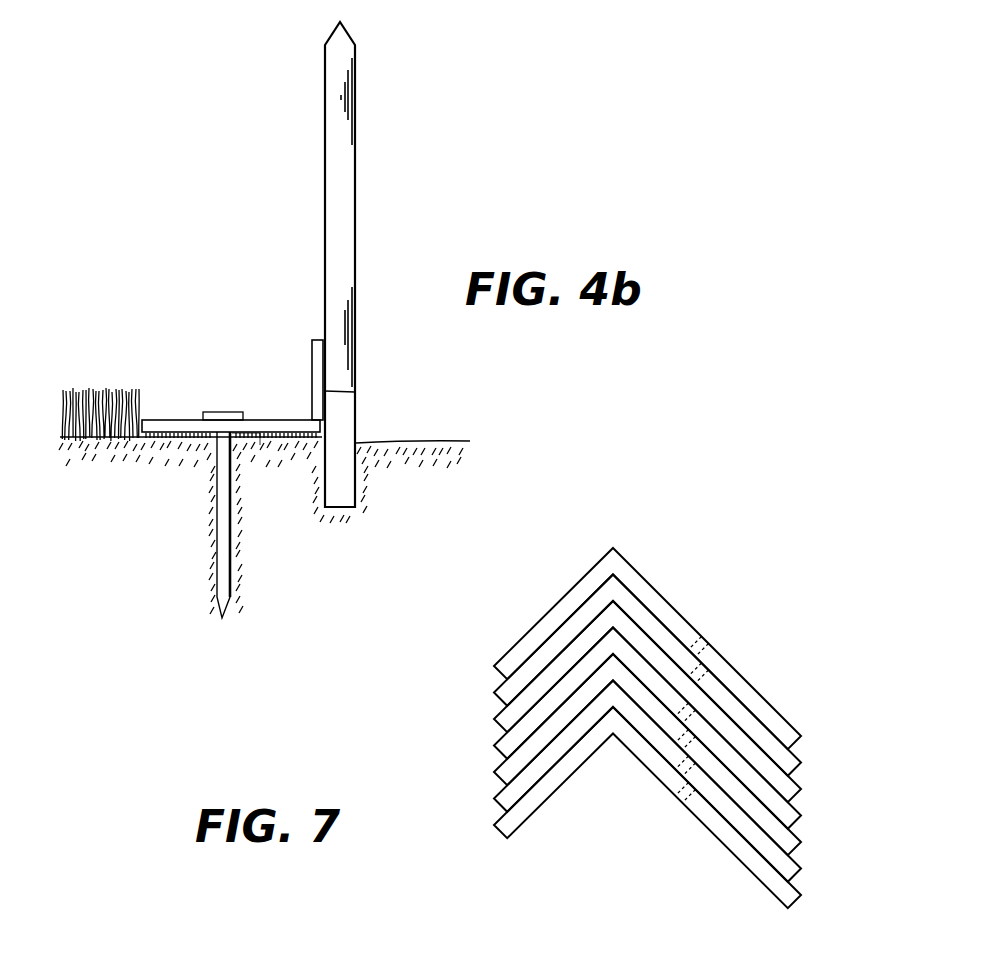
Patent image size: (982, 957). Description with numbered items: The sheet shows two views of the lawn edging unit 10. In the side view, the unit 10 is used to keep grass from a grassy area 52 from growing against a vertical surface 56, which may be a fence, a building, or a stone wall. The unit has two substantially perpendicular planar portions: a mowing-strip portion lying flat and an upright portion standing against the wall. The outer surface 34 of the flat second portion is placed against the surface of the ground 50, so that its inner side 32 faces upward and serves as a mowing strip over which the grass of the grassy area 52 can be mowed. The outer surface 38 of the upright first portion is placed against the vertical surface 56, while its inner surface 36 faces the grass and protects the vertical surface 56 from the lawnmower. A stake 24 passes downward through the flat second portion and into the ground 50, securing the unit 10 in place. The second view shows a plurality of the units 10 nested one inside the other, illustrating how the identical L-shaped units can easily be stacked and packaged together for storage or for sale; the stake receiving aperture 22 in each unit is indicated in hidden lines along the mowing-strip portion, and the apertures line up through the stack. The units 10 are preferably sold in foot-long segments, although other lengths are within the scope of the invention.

In FIG. 7, the lawn edging unit 10 is at (493, 790).
In FIG. 7, the stake receiving aperture 22 is at (700, 715).
In FIG. 4B, the stake 24 is at (225, 540).
In FIG. 4B, the inner side of the second portion 32 is at (178, 420).
In FIG. 4B, the outer surface of the second portion 34 is at (257, 447).
In FIG. 4B, the inner surface of the first portion 36 is at (312, 362).
In FIG. 4B, the outer surface of the first portion 38 is at (325, 391).
In FIG. 4B, the ground 50 is at (122, 487).
In FIG. 4B, the grassy area 52 is at (92, 395).
In FIG. 4B, the vertical surface 56 is at (325, 140).